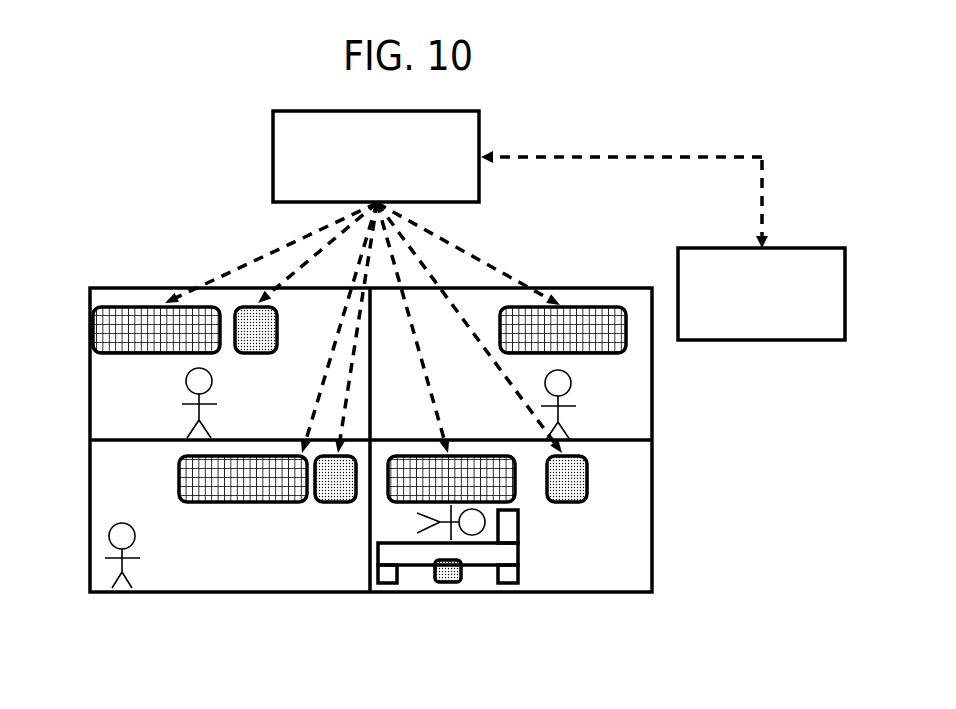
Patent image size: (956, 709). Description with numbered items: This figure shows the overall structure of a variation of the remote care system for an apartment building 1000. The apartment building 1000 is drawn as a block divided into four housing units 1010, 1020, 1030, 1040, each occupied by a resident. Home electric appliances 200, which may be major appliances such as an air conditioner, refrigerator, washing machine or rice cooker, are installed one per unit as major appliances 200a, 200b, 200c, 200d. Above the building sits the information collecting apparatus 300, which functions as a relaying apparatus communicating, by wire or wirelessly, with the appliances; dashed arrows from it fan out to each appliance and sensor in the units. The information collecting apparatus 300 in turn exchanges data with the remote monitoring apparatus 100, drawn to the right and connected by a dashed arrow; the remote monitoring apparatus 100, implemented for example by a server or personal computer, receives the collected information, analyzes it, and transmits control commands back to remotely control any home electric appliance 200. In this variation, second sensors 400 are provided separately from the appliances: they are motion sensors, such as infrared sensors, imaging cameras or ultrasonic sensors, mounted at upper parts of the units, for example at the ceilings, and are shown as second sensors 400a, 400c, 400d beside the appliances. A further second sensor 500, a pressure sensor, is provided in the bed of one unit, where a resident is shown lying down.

The remote monitoring apparatus 100 is at (822, 248).
The information collecting apparatus 300 is at (272, 158).
The apartment building 1000 is at (593, 287).
The housing unit 1010 is at (849, 461).
The housing unit 1020 is at (834, 617).
The housing unit 1030 is at (120, 397).
The housing unit 1040 is at (249, 654).
The home electric appliance 200 is at (135, 290).
The major appliance 200a is at (145, 308).
The major appliance 200b is at (823, 384).
The major appliance 200c is at (515, 500).
The major appliance 200d is at (253, 502).
The second sensor 400 is at (180, 262).
The second sensor 400a is at (248, 315).
The second sensor 400c is at (577, 482).
The second sensor 400d is at (335, 488).
The second sensor 500 is at (448, 588).